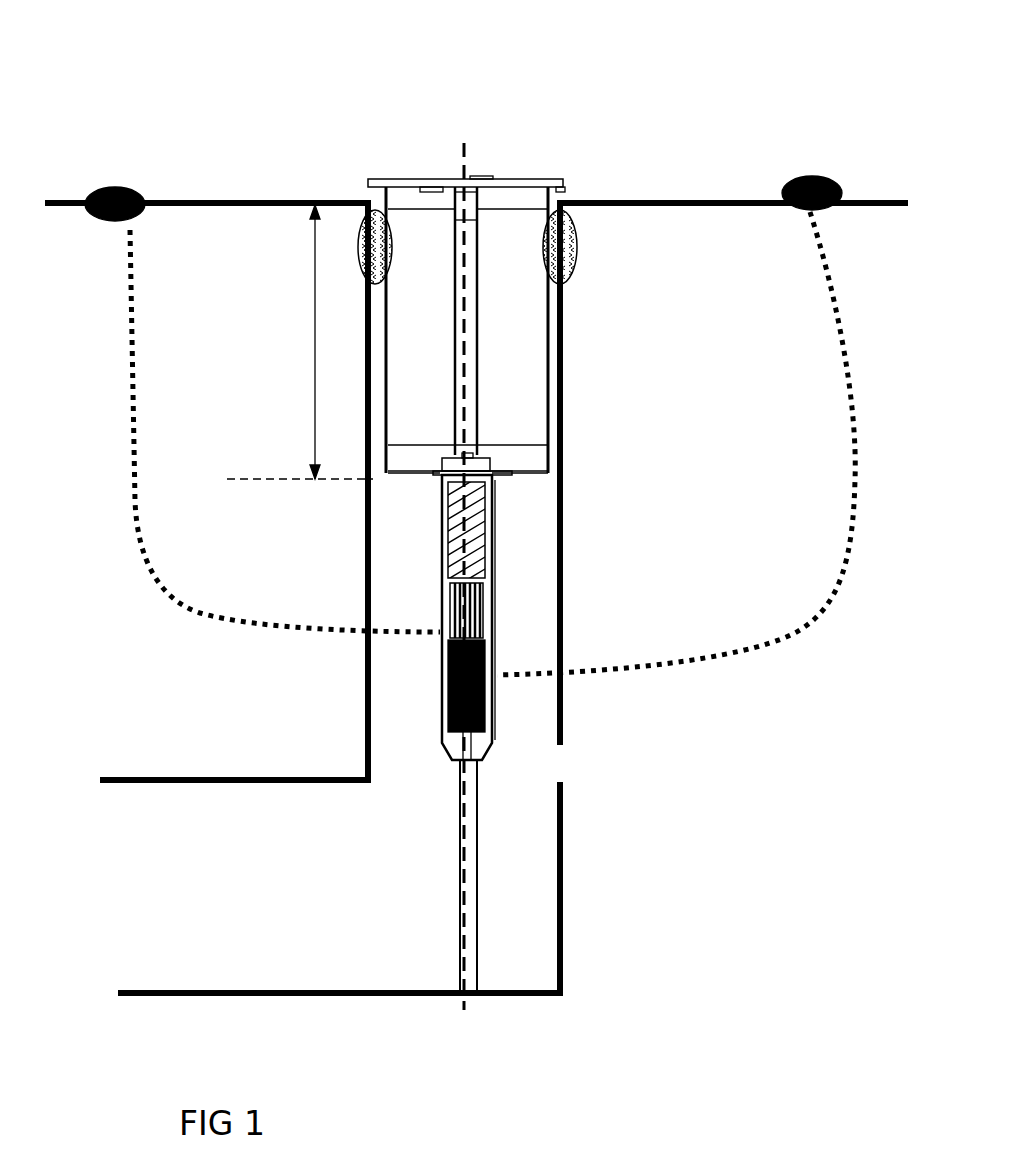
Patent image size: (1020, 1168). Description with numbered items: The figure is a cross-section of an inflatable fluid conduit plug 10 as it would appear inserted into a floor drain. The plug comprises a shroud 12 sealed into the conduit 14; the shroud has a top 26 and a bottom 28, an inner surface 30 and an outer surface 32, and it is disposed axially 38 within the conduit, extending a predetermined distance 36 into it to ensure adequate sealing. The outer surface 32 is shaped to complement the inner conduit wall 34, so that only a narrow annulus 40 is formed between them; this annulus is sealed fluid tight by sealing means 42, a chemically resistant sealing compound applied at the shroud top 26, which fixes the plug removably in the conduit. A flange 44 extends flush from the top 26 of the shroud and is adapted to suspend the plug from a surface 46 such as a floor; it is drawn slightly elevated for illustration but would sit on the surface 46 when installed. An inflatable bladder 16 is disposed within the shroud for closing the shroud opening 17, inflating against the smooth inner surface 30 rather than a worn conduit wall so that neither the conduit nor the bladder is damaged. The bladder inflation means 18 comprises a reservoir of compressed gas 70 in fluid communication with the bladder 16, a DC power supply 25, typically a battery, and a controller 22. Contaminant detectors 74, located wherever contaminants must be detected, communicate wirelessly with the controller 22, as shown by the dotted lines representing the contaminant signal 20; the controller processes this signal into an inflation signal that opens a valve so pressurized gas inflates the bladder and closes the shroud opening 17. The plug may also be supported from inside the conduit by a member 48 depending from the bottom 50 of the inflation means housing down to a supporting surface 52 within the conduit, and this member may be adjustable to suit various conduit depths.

The inflatable fluid conduit plug 10 is at (318, 128).
The shroud 12 is at (532, 282).
The conduit 14 is at (397, 722).
The inflatable bladder 16 is at (458, 355).
The shroud opening 17 is at (498, 240).
The bladder inflation means 18 is at (502, 695).
The contaminant signal 20 is at (170, 610).
The controller 22 is at (450, 665).
The DC power supply 25 is at (437, 602).
The shroud top 26 is at (370, 183).
The shroud bottom 28 is at (372, 479).
The shroud inner surface 30 is at (390, 315).
The shroud outer surface 32 is at (550, 342).
The inner conduit wall 34 is at (543, 585).
The predetermined distance 36 is at (300, 342).
The axial direction 38 is at (477, 587).
The annulus 40 is at (543, 483).
The sealing means 42 is at (588, 245).
The flange 44 is at (567, 178).
The surface 46 is at (762, 205).
The member 48 is at (448, 908).
The bottom of inflation means housing 50 is at (492, 770).
The supporting surface 52 is at (353, 985).
The reservoir of compressed gas 70 is at (487, 560).
The contaminant detectors 74 is at (107, 237).